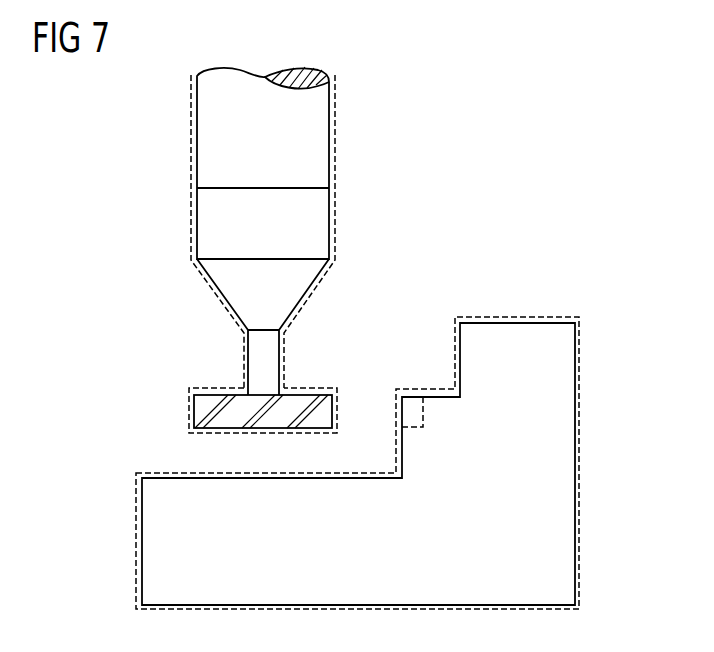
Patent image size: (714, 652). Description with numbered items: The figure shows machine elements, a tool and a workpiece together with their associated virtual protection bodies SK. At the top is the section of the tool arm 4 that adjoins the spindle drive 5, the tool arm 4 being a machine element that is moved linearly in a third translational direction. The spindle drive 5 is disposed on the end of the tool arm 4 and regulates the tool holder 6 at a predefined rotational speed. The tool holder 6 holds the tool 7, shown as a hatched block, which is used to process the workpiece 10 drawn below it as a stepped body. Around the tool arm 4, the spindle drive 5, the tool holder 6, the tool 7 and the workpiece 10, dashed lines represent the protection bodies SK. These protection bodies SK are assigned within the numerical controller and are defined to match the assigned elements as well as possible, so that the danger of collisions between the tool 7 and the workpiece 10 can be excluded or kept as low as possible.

The tool arm 4 is at (320, 134).
The spindle drive 5 is at (322, 224).
The tool holder 6 is at (306, 287).
The tool 7 is at (326, 412).
The workpiece 10 is at (565, 463).
The protection bodies SK is at (191, 112).